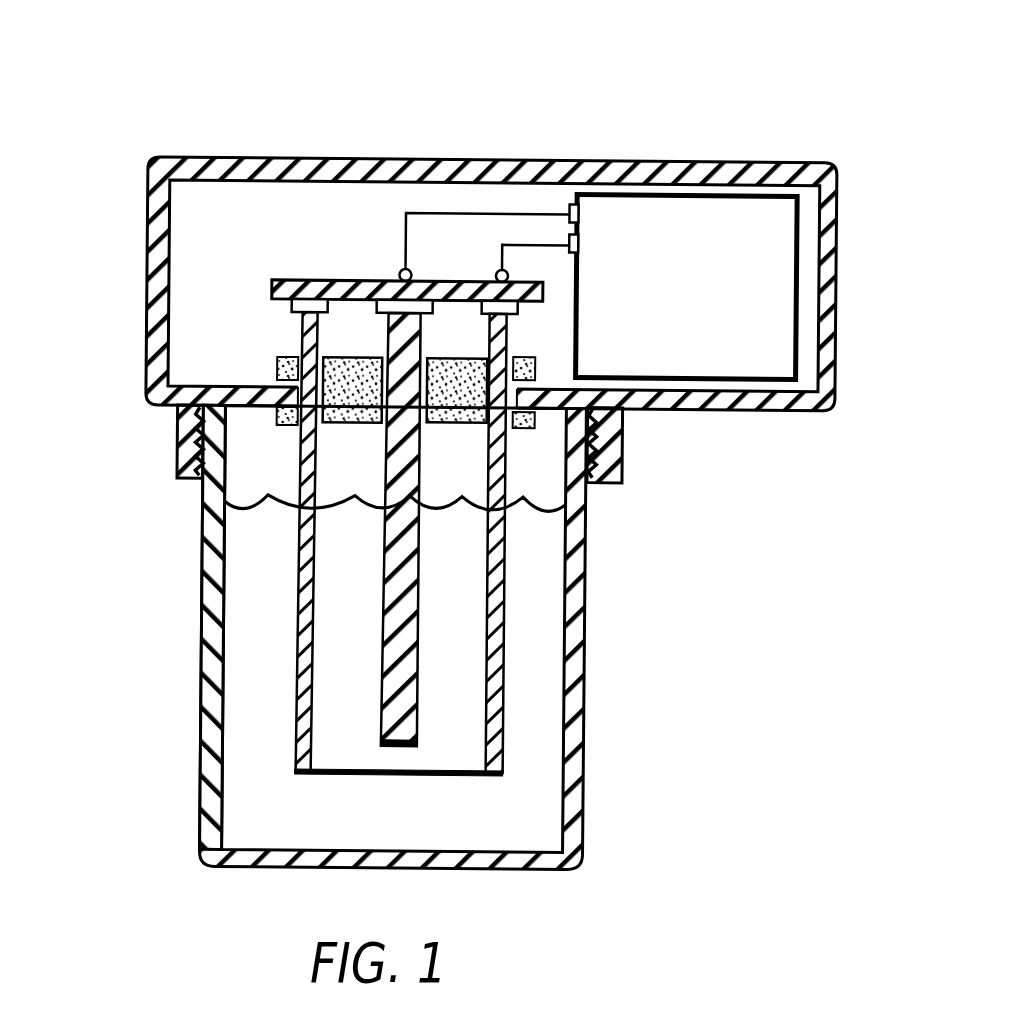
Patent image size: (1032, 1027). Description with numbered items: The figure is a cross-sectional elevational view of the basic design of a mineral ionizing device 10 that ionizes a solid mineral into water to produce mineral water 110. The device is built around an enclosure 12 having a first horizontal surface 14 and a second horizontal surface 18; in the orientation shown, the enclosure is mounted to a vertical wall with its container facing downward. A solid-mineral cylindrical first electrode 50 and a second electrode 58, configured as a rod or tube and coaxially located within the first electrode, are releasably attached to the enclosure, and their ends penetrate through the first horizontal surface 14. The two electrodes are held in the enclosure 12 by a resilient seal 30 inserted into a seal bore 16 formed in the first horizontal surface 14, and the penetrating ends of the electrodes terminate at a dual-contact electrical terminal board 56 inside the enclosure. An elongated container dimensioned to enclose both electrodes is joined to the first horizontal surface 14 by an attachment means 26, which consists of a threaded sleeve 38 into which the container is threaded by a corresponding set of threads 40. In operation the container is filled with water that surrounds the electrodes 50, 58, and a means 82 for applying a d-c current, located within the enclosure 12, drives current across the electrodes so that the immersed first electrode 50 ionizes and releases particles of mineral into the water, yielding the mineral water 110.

The mineral ionizing device 10 is at (490, 439).
The enclosure 12 is at (157, 299).
The first horizontal surface 14 is at (171, 401).
The seal bore 16 is at (279, 428).
The second horizontal surface 18 is at (764, 160).
The attachment means 26 is at (620, 480).
The resilient seal 30 is at (276, 366).
The threaded sleeve 38 is at (197, 452).
The threads 40 is at (604, 462).
The solid-mineral cylindrical first electrode 50 is at (506, 554).
The dual-contact electrical terminal board 56 is at (270, 283).
The second electrode 58 is at (401, 648).
The means for applying a d-c current 82 is at (682, 286).
The mineral water 110 is at (249, 612).